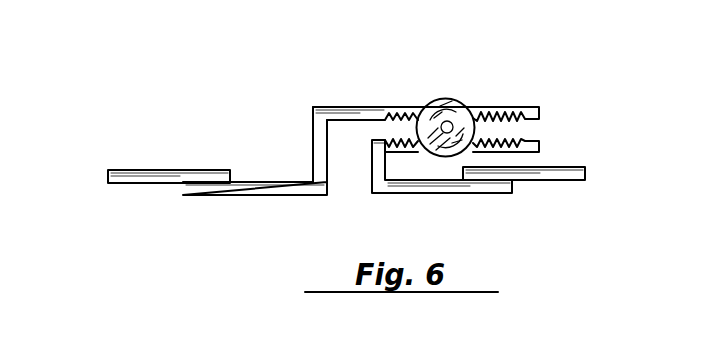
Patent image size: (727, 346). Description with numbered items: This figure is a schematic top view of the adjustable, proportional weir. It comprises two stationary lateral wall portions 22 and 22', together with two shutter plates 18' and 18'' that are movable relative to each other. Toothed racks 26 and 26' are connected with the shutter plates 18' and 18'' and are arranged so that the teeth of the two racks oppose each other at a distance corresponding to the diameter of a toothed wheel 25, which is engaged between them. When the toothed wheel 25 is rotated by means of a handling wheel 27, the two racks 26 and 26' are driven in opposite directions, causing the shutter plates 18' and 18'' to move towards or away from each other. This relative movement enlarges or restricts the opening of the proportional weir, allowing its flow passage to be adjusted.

The stationary lateral wall portion 22 is at (157, 156).
The stationary lateral wall portion 22' is at (548, 194).
The shutter plate 18' is at (255, 172).
The shutter plate 18'' is at (445, 188).
The toothed wheel 25 is at (438, 113).
The toothed rack 26 is at (457, 90).
The toothed rack 26' is at (505, 128).
The handling wheel 27 is at (460, 103).